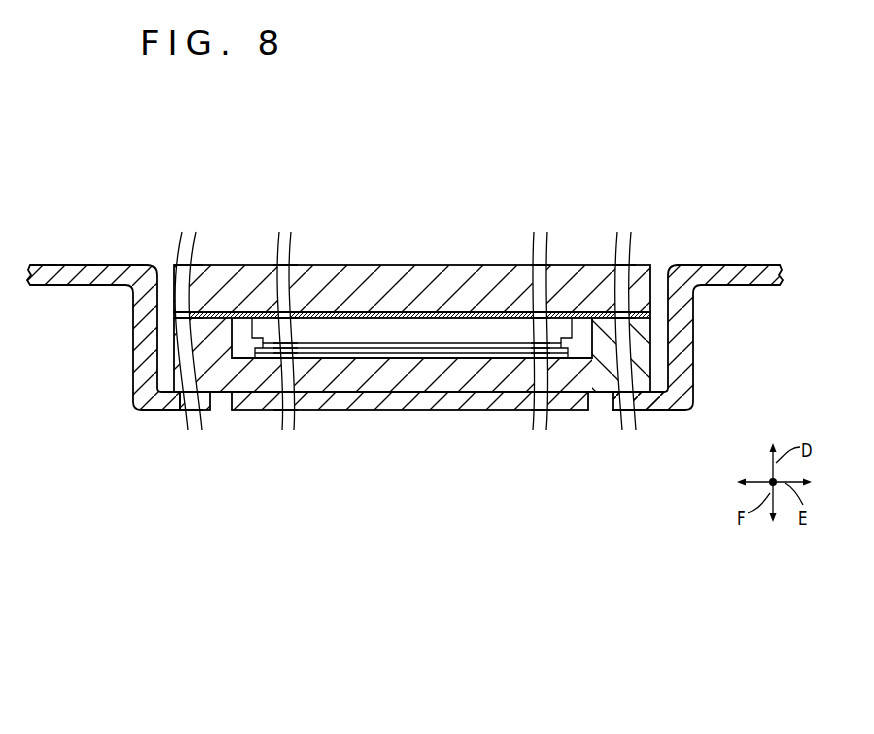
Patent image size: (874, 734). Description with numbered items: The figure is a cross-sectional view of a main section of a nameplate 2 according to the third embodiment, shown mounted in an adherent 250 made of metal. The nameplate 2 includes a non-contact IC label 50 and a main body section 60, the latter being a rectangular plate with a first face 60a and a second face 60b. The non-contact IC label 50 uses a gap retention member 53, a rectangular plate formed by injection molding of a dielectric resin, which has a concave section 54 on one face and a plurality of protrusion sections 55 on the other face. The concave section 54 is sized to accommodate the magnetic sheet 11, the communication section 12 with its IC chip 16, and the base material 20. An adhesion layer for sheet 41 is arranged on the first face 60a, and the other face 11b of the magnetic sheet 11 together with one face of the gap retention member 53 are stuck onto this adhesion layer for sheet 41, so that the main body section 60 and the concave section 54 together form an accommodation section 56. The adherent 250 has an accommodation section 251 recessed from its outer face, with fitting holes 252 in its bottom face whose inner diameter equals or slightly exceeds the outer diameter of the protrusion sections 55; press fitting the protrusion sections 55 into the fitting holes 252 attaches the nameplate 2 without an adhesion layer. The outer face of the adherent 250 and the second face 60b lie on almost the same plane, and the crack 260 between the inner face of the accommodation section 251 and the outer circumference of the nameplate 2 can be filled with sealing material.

The nameplate 2 is at (219, 229).
The magnetic sheet 11 is at (371, 330).
The other face of the magnetic sheet 11b is at (423, 313).
The communication section 12 is at (245, 345).
The IC chip 16 is at (412, 360).
The base material 20 is at (553, 393).
The adhesion layer for sheet 41 is at (177, 317).
The non-contact IC label 50 is at (490, 397).
The gap retention member 53 is at (640, 363).
The concave section 54 is at (465, 356).
The protrusion section 55 is at (224, 398).
The accommodation section 56 is at (244, 328).
The main body section 60 is at (240, 266).
The first face of the main body section 60a is at (642, 330).
The second face of the main body section 60b is at (512, 324).
The adherent 250 is at (715, 273).
The accommodation section of the adherent 251 is at (162, 263).
The fitting hole 252 is at (614, 394).
The crack 260 is at (658, 293).